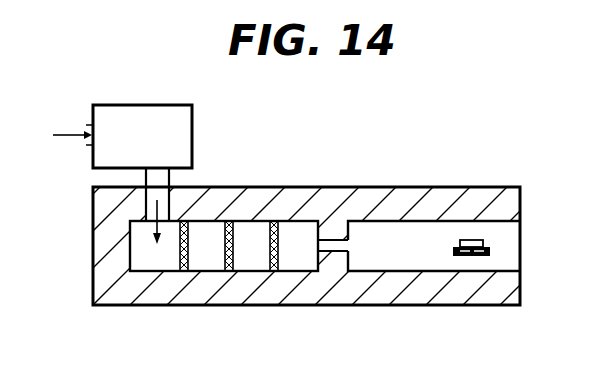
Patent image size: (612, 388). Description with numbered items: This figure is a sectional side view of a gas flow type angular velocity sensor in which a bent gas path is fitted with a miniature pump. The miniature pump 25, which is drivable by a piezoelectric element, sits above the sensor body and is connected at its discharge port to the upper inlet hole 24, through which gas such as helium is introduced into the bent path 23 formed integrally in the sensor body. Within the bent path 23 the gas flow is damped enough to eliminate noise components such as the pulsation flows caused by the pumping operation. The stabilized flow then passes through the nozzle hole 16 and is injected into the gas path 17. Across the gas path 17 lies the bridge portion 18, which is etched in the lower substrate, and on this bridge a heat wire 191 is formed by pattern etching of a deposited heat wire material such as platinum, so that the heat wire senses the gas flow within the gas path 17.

The miniature pump 25 is at (178, 130).
The upper inlet hole 24 is at (146, 197).
The bent path 23 is at (212, 252).
The nozzle hole 16 is at (335, 247).
The gas path 17 is at (423, 252).
The bridge portion 18 is at (483, 257).
The heat wire 191 is at (478, 242).